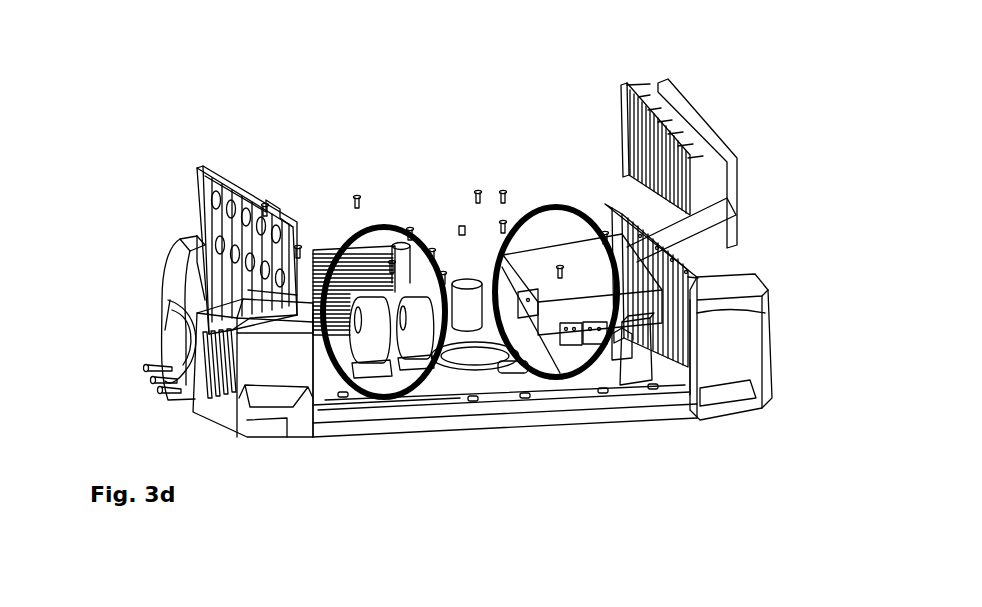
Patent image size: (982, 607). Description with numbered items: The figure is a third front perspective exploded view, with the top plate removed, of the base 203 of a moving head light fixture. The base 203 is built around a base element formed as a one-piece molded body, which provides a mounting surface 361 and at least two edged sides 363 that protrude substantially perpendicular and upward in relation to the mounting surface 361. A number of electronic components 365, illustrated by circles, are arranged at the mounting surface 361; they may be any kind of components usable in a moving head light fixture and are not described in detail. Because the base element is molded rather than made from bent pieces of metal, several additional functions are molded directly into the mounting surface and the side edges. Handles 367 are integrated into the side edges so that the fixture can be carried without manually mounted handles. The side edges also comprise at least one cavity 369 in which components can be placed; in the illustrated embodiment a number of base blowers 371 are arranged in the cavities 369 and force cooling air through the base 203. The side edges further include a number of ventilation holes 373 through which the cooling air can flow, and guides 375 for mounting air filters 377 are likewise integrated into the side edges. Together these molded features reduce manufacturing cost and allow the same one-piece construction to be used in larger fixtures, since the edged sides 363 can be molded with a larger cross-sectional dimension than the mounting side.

The base 203 is at (164, 118).
The mounting surface 361 is at (530, 373).
The edged sides 363 is at (281, 368).
The electronic components 365 is at (548, 210).
The handles 367 is at (178, 333).
The cavity 369 is at (176, 236).
The base blowers 371 is at (228, 185).
The ventilation holes 373 is at (604, 194).
The guides 375 is at (700, 302).
The air filters 377 is at (693, 115).